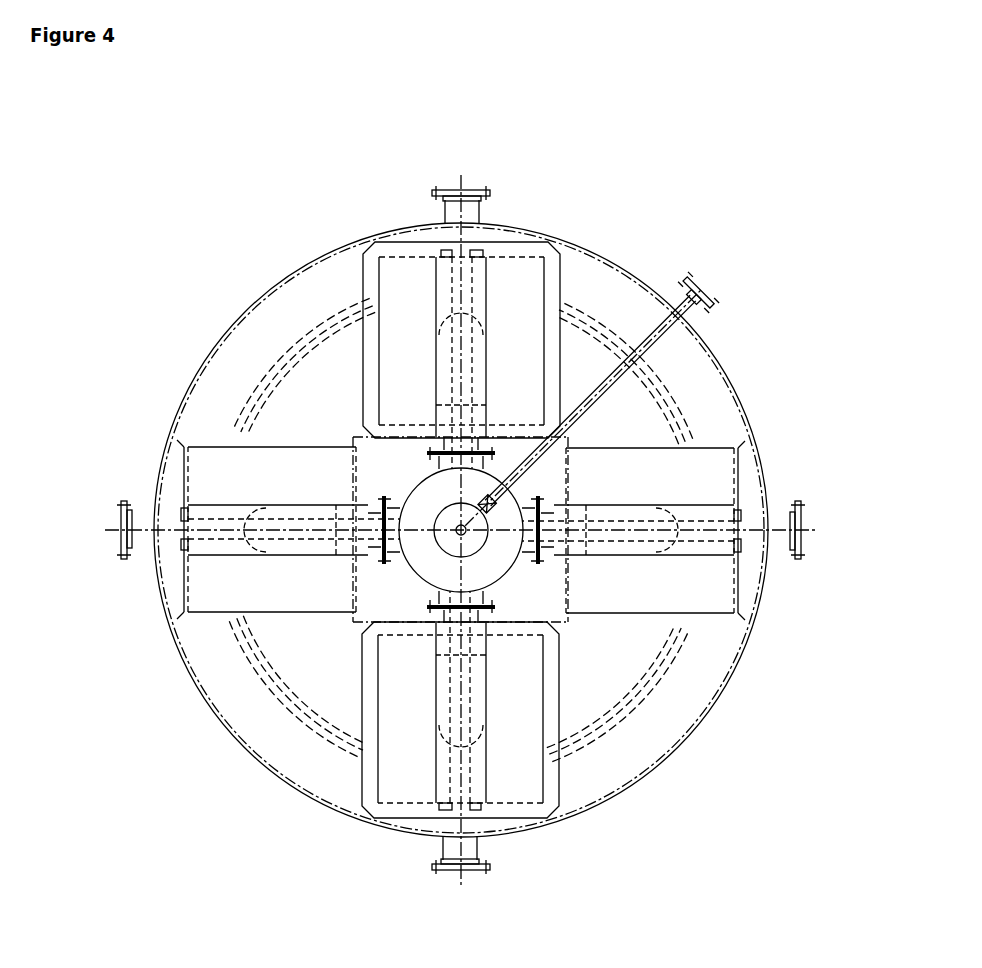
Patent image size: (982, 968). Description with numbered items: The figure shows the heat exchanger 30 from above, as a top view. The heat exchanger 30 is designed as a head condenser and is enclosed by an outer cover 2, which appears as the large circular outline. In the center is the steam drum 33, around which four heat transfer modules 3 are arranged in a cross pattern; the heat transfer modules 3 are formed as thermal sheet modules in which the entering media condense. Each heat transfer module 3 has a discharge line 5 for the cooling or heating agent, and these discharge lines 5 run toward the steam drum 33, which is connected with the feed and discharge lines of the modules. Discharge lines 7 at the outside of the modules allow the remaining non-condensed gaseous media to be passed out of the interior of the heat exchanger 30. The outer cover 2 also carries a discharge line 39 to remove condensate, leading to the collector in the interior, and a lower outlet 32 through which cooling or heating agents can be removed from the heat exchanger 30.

The outer cover 2 is at (202, 355).
The heat exchanger 30 is at (247, 289).
The heat transfer module 3 is at (402, 270).
The discharge line 5 is at (474, 395).
The discharge line 7 is at (457, 185).
The lower outlet 32 is at (607, 400).
The steam drum 33 is at (487, 568).
The discharge line 39 is at (707, 292).